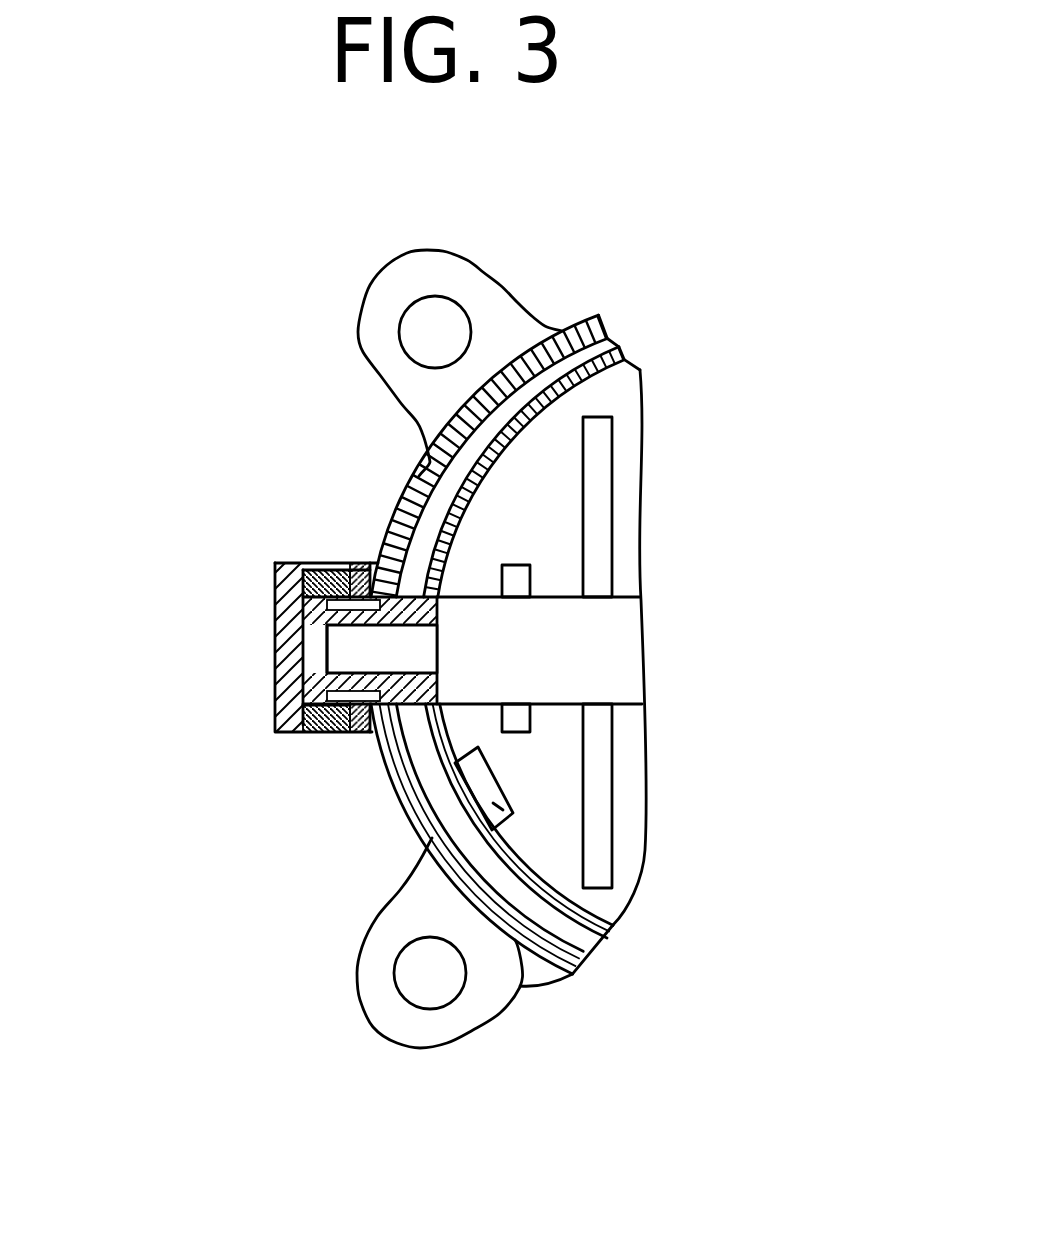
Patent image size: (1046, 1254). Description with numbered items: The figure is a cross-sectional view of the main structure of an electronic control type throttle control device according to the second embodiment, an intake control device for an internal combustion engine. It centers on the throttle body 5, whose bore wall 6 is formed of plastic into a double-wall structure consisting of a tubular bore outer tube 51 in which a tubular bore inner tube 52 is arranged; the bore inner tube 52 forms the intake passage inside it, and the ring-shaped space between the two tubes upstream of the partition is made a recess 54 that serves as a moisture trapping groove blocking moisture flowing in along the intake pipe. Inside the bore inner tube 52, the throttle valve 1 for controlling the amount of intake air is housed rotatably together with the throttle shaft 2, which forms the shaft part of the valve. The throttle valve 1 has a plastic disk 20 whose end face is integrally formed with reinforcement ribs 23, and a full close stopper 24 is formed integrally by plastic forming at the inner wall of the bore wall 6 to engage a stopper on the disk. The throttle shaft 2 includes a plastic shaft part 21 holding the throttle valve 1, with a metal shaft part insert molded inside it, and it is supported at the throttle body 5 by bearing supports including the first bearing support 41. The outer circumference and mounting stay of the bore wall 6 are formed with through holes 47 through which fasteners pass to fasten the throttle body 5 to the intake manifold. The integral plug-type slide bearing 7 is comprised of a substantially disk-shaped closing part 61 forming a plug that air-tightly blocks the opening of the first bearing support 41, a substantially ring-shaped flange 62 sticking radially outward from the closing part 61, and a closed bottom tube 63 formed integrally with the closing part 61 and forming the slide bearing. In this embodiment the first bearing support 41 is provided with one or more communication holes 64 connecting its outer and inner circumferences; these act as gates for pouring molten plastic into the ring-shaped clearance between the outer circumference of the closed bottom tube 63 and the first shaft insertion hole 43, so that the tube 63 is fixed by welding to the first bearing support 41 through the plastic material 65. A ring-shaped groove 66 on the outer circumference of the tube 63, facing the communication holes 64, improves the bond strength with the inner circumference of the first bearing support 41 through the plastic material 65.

The throttle valve 1 is at (704, 647).
The plastic disk 20 is at (633, 808).
The throttle shaft 2 is at (618, 667).
The throttle body 5 is at (396, 842).
The bore wall 6 is at (757, 968).
The integral plug-type slide bearing 7 is at (250, 527).
The plastic shaft part 21 is at (313, 657).
The reinforcement ribs 23 is at (598, 446).
The full close stopper 24 is at (590, 842).
The first bearing support 41 is at (330, 733).
The first shaft insertion hole 43 is at (423, 672).
The through holes 47 is at (435, 322).
The bore outer tube 51 is at (538, 923).
The bore inner tube 52 is at (605, 942).
The recess (moisture trapping groove) 54 is at (523, 988).
The closing part 61 is at (340, 650).
The flange 62 is at (277, 582).
The closed bottom tube 63 is at (640, 700).
The communication hole 64 is at (366, 563).
The plastic material 65 is at (322, 568).
The ring-shaped groove 66 is at (325, 710).